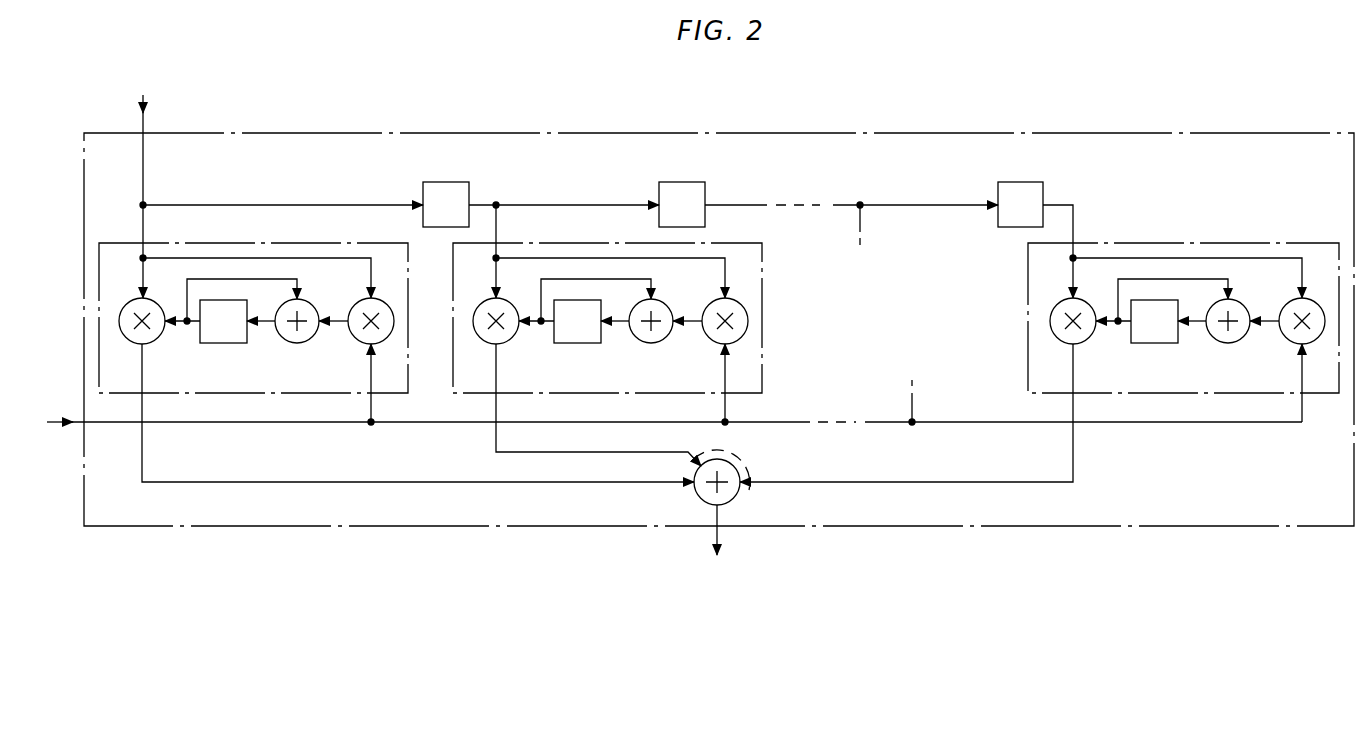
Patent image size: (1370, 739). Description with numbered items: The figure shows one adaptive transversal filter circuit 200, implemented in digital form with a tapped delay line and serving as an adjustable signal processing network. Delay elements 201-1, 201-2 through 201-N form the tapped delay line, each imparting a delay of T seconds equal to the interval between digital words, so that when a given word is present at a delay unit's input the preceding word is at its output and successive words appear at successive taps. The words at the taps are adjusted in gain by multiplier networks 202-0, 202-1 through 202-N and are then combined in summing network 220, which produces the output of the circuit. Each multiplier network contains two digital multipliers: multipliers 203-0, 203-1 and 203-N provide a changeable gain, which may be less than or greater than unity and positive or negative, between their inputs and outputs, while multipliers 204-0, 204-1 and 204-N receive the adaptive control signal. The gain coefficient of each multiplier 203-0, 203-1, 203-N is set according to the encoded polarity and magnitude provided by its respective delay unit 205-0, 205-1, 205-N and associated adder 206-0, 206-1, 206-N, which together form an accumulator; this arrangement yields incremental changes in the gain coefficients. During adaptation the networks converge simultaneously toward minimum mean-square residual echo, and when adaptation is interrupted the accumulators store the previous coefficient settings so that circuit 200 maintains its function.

The adaptive transversal filter circuit 200 is at (450, 133).
The delay element 201-1 is at (470, 182).
The delay element 201-2 is at (706, 182).
The delay element 201-N is at (1044, 182).
The multiplier network 202-0 is at (308, 395).
The multiplier network 202-1 is at (662, 395).
The multiplier network 202-N is at (1239, 395).
The digital multiplier 203-0 is at (159, 339).
The digital multiplier 203-1 is at (513, 339).
The digital multiplier 203-N is at (1090, 339).
The digital multiplier 204-0 is at (354, 341).
The digital multiplier 204-1 is at (708, 341).
The digital multiplier 204-N is at (1285, 341).
The delay unit 205-0 is at (213, 300).
The delay unit 205-1 is at (567, 300).
The delay unit 205-N is at (1144, 300).
The adder 206-0 is at (320, 288).
The adder 206-1 is at (674, 288).
The adder 206-N is at (1251, 288).
The summing network 220 is at (735, 497).